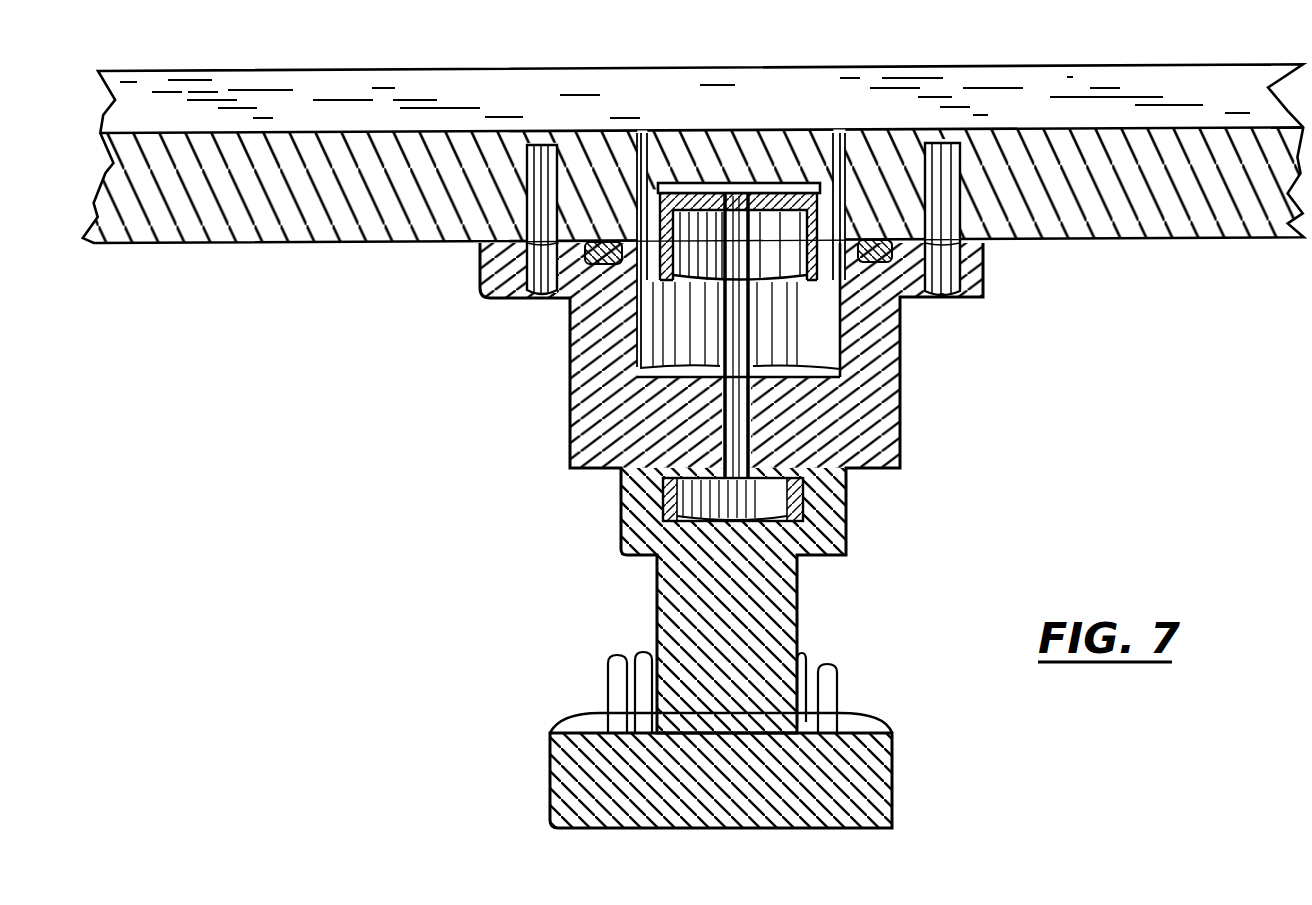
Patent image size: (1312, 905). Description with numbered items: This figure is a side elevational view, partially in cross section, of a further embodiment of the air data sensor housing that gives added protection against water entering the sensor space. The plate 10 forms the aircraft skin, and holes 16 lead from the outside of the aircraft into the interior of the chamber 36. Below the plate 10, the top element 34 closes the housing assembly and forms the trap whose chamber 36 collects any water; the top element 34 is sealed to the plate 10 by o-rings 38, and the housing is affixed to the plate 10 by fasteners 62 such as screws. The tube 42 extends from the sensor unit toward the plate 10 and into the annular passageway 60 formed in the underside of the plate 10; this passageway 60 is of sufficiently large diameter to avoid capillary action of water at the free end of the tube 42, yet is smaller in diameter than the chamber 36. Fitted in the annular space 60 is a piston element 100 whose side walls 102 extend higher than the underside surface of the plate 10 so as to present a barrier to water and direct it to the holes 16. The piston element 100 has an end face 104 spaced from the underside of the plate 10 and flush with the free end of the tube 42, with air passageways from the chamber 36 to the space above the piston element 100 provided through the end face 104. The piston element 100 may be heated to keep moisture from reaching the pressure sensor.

The plate 10 is at (325, 83).
The holes 16 is at (668, 117).
The top element 34 is at (872, 468).
The trap chamber 36 is at (822, 325).
The o-rings 38 is at (876, 253).
The tube 42 is at (737, 356).
The annular passageway 60 is at (792, 193).
The fasteners 62 is at (983, 257).
The piston element 100 is at (635, 373).
The side walls 102 is at (667, 262).
The end face 104 is at (687, 195).